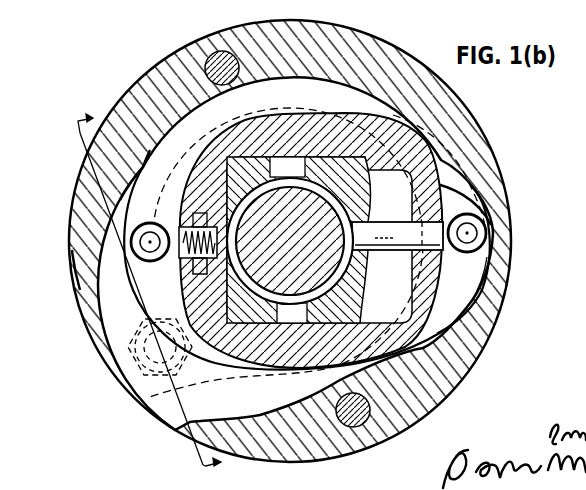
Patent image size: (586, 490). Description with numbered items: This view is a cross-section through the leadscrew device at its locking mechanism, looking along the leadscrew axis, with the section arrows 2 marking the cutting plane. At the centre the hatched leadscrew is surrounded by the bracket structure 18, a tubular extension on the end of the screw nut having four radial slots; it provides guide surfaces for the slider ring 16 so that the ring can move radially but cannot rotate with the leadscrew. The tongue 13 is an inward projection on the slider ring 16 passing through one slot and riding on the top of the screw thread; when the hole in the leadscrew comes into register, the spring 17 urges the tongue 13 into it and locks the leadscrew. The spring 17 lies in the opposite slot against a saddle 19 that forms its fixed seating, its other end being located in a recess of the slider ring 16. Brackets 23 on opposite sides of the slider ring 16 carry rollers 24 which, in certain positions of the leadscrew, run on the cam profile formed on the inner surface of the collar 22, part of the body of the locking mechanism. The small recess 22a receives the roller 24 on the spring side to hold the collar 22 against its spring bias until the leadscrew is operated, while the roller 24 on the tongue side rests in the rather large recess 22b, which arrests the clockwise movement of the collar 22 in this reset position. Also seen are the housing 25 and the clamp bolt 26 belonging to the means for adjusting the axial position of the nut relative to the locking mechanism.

The section line 2 is at (141, 294).
The tongue 13 is at (397, 251).
The slider ring 16 is at (288, 115).
The spring 17 is at (194, 270).
The bracket structure 18 is at (358, 187).
The saddle 19 is at (188, 223).
The collar member 22 is at (150, 80).
The recess 22a is at (140, 169).
The recess 22b is at (458, 200).
The brackets 23 is at (489, 320).
The rollers 24 is at (150, 262).
The housing 25 is at (112, 232).
The clamp bolt 26 is at (138, 377).